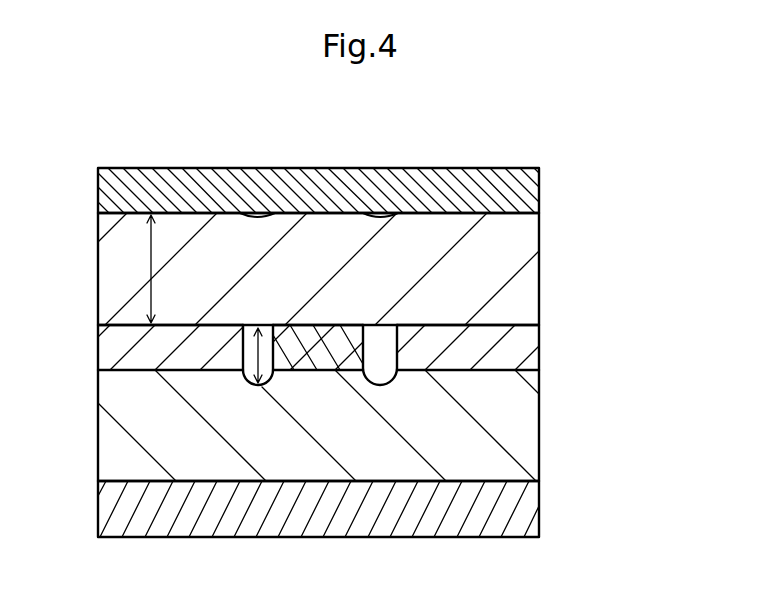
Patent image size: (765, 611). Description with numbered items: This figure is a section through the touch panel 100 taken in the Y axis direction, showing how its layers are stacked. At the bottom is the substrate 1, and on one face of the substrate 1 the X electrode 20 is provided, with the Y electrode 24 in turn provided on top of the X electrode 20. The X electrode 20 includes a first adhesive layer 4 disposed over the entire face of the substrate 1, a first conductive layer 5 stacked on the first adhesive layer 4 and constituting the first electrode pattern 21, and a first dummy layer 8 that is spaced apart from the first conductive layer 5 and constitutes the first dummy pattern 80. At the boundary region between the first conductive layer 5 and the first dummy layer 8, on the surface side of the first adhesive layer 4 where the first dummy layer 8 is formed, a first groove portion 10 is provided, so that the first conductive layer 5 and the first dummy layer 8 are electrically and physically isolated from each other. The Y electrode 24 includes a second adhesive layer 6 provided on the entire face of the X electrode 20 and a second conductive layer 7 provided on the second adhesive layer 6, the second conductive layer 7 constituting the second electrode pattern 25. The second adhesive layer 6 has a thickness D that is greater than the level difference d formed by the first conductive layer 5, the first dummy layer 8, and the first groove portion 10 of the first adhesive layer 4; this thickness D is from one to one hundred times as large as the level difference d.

The touch panel 100 is at (311, 143).
The substrate 1 is at (520, 512).
The first adhesive layer 4 is at (520, 428).
The first conductive layer 5 is at (318, 459).
The first electrode pattern 21 is at (315, 353).
The second adhesive layer 6 is at (520, 277).
The second conductive layer 7 is at (387, 192).
The second electrode pattern 25 is at (520, 192).
The first dummy layer 8 is at (387, 459).
The first dummy pattern 80 is at (520, 348).
The first groove portion 10 is at (380, 385).
The X electrode 20 is at (670, 327).
The Y electrode 24 is at (680, 170).